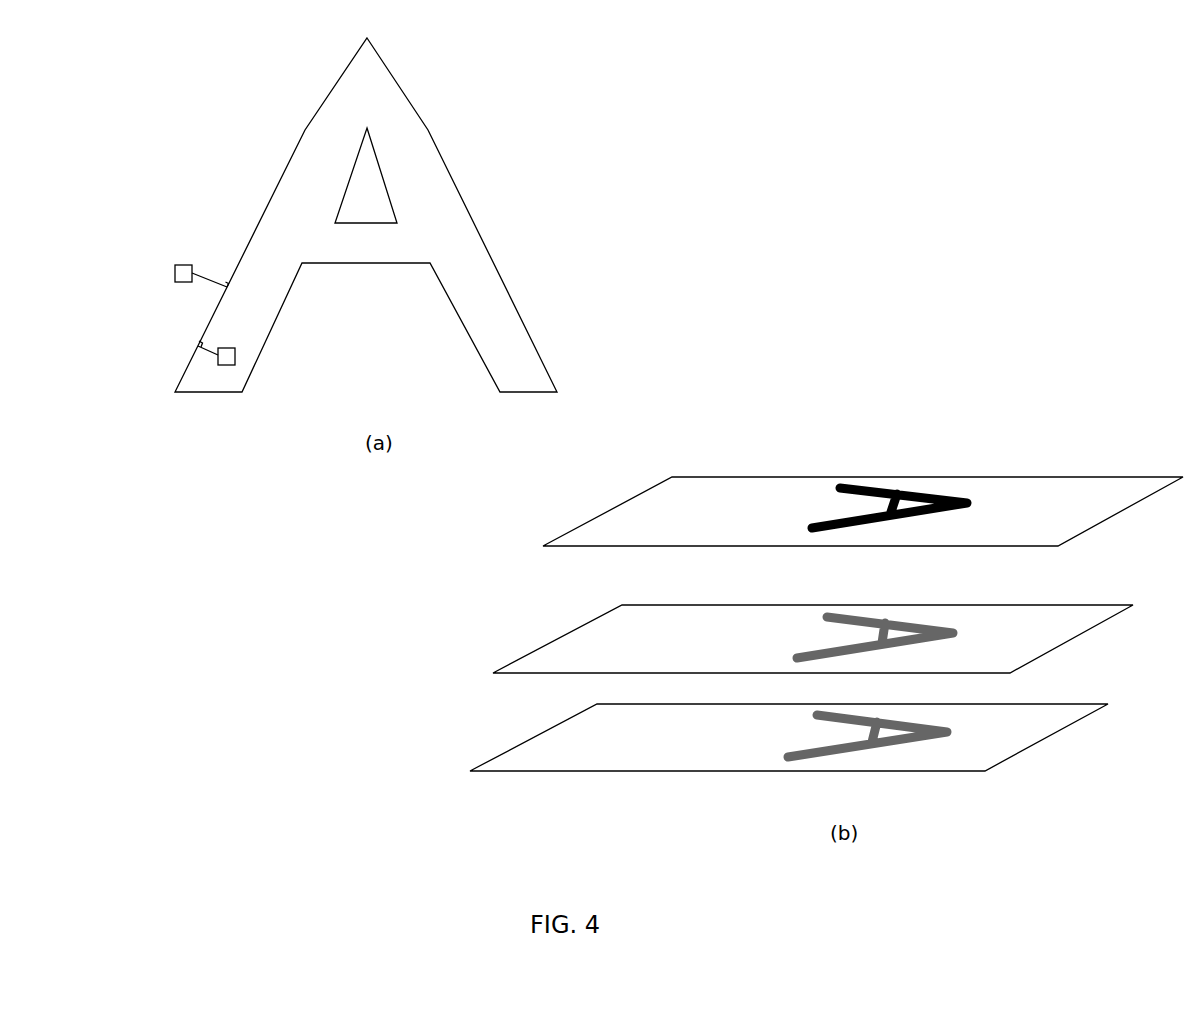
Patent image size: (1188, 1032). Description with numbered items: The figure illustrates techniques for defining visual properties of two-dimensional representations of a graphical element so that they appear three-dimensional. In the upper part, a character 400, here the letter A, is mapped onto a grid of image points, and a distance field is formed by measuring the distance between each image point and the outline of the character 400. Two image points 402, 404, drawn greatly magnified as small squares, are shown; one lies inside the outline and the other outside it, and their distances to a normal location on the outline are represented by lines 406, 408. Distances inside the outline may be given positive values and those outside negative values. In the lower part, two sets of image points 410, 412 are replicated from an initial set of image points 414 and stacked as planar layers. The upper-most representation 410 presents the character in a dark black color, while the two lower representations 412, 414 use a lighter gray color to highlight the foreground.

The character 400 is at (345, 73).
The image point 402 is at (262, 322).
The image point 404 is at (176, 265).
The line 406 is at (212, 352).
The line 408 is at (207, 279).
The set of image points 410 is at (647, 493).
The set of image points 412 is at (562, 637).
The set of image points 414 is at (508, 750).